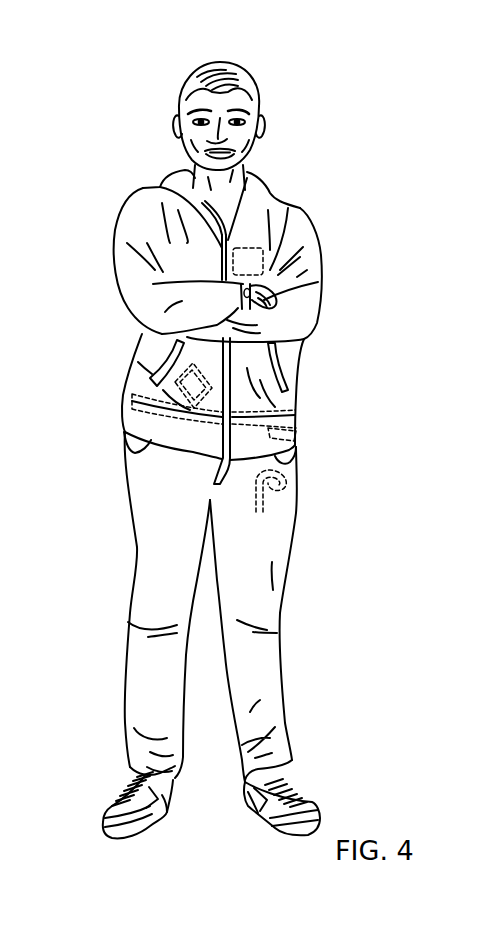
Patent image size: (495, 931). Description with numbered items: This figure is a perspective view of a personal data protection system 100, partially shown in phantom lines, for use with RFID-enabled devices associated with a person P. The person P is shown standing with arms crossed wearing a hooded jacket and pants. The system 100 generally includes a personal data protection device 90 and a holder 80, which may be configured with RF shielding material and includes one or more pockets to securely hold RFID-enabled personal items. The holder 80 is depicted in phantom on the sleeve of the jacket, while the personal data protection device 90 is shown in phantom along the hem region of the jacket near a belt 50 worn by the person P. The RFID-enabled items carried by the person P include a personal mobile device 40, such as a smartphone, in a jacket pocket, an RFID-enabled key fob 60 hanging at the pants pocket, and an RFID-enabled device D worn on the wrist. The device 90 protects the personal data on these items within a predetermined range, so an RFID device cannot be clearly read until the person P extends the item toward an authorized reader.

The personal data protection system 100 is at (367, 69).
The person P is at (118, 129).
The RFID-enabled device D is at (255, 288).
The holder 80 is at (263, 262).
The personal mobile device 40 is at (174, 380).
The personal data protection device 90 is at (130, 400).
The belt 50 is at (296, 428).
The RFID-enabled key fob 60 is at (295, 467).